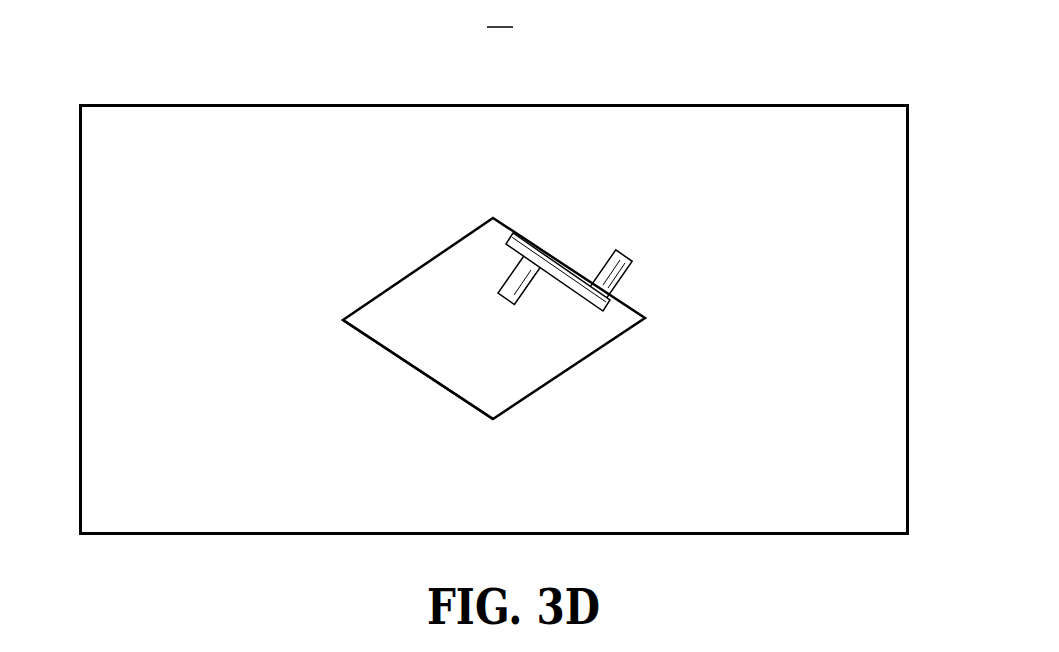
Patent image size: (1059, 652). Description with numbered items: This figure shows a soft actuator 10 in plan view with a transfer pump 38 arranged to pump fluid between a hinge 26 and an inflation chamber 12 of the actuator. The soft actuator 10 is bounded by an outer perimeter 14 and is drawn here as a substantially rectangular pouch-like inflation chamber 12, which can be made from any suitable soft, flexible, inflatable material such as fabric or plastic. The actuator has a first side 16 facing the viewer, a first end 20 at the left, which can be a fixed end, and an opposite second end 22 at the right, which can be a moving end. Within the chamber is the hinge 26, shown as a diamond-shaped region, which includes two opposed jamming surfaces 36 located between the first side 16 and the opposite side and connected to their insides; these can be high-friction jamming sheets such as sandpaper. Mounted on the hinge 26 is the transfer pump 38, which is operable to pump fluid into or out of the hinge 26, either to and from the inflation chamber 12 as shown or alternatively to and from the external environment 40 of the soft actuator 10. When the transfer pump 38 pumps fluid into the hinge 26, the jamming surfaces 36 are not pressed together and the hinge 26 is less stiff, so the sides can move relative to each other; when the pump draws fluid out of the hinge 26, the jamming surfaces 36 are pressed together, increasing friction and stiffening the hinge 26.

The soft actuator 10 is at (873, 104).
The inflation chamber 12 is at (909, 143).
The outer perimeter 14 is at (909, 233).
The first side 16 is at (246, 205).
The first end 20 is at (78, 155).
The second end 22 is at (909, 390).
The hinge 26 is at (553, 380).
The jamming surfaces 36 is at (437, 333).
The transfer pump 38 is at (558, 260).
The external environment 40 is at (500, 15).